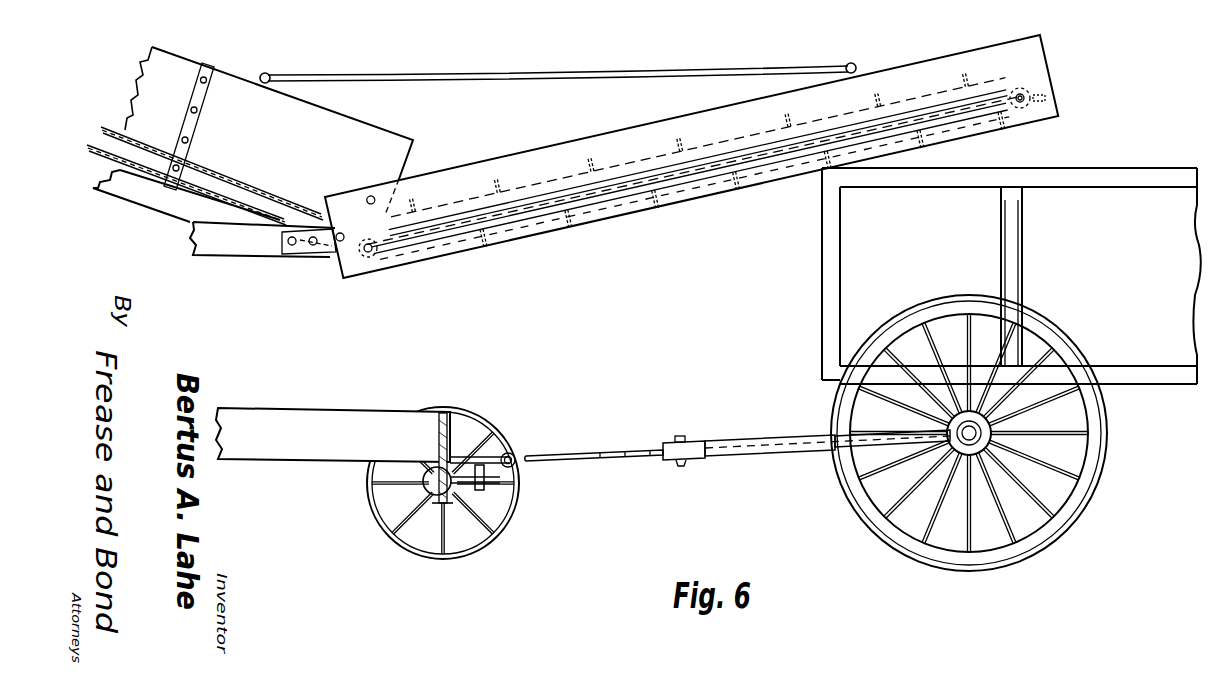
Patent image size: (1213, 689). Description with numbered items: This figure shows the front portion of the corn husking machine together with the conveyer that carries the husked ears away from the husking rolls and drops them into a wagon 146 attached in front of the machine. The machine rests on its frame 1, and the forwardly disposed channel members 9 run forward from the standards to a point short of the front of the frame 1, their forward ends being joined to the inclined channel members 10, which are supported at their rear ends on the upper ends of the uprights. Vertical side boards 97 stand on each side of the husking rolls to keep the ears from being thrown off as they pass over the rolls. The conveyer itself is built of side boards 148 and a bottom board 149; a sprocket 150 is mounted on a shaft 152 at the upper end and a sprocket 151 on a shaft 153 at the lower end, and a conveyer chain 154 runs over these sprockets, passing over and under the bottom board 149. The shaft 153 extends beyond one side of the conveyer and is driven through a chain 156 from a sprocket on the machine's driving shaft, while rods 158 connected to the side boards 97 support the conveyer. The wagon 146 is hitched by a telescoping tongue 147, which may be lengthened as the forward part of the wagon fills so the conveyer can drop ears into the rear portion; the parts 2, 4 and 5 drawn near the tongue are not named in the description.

The frame 1 is at (327, 452).
The caster wheel 2 is at (511, 501).
The axle block 4 is at (452, 502).
The swivel hub 5 is at (433, 504).
The forwardly disposed channel members 9 is at (252, 248).
The inclined channel members 10 is at (157, 205).
The vertical side boards 97 is at (269, 131).
The wagon 146 is at (1095, 177).
The telescoping tongue 147 is at (712, 443).
The side boards 148 is at (658, 122).
The bottom board 149 is at (694, 152).
The sprocket 150 is at (1028, 80).
The sprocket 151 is at (375, 256).
The shaft 152 is at (1026, 96).
The shaft 153 is at (366, 257).
The conveyer chain 154 is at (545, 188).
The chain 156 is at (264, 190).
The rods 158 is at (558, 69).